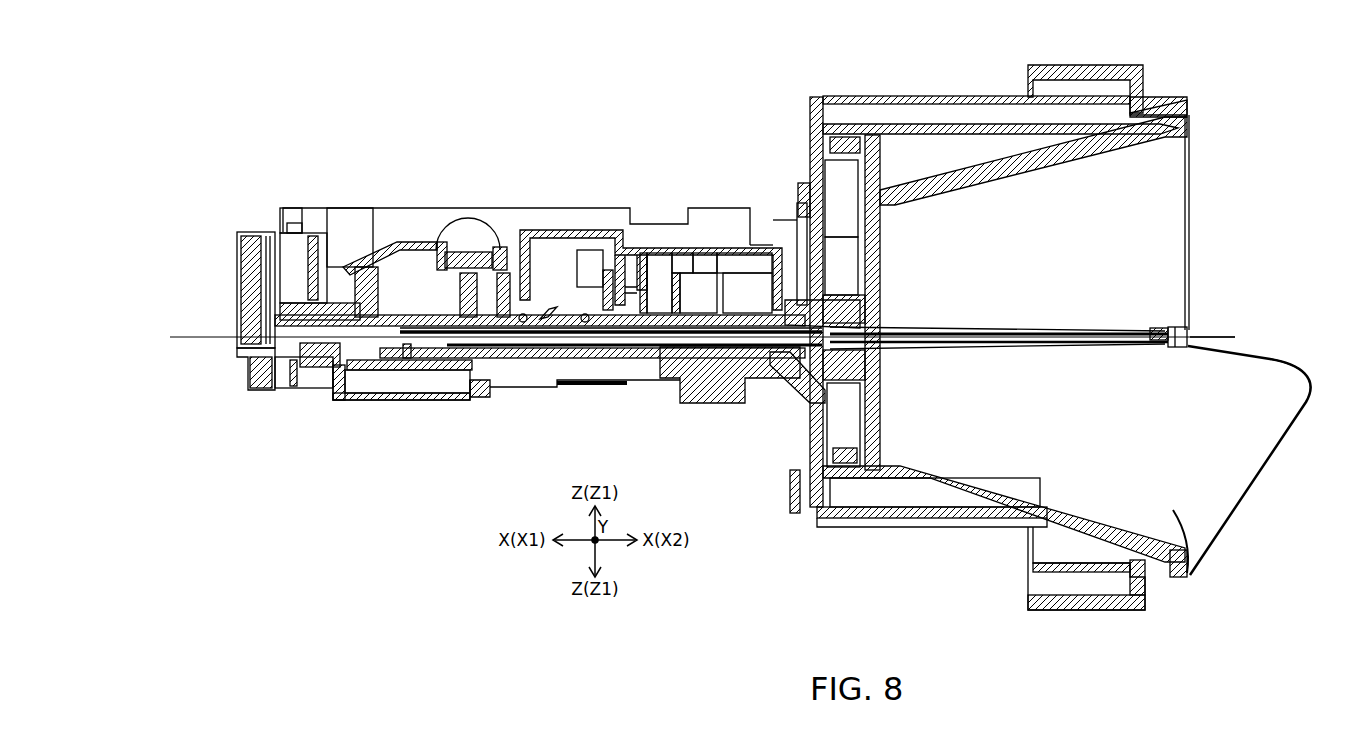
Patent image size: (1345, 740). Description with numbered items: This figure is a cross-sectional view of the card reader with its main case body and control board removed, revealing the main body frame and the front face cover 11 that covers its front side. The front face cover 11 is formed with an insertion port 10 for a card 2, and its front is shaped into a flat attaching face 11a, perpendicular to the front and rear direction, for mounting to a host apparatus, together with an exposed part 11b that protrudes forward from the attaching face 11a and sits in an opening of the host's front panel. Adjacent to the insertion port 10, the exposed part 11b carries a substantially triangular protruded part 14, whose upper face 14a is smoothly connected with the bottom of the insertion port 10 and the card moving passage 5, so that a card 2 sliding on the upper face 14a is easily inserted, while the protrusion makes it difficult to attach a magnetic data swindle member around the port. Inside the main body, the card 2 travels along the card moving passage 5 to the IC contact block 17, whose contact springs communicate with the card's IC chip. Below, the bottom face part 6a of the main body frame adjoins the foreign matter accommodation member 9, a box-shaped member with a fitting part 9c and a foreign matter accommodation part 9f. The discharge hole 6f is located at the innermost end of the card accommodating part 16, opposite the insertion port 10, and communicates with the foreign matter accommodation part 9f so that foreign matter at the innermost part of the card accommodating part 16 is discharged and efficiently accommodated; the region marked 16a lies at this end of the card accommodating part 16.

The card 2 is at (654, 403).
The card moving passage 5 is at (1195, 338).
The bottom face part 6a is at (548, 380).
The discharge hole 6f is at (413, 350).
The foreign matter accommodation member 9 is at (352, 400).
The fitting part 9c is at (484, 385).
The foreign matter accommodation part 9f is at (368, 380).
The insertion port 10 is at (1189, 331).
The front face cover 11 is at (856, 95).
The attaching face 11a is at (1145, 73).
The exposed part 11b is at (1192, 128).
The protruded part 14 is at (1247, 460).
The upper face 14a is at (1282, 360).
The card accommodating part 16 is at (572, 350).
The substrate end portion 16a is at (440, 350).
The IC contact block 17 is at (547, 300).